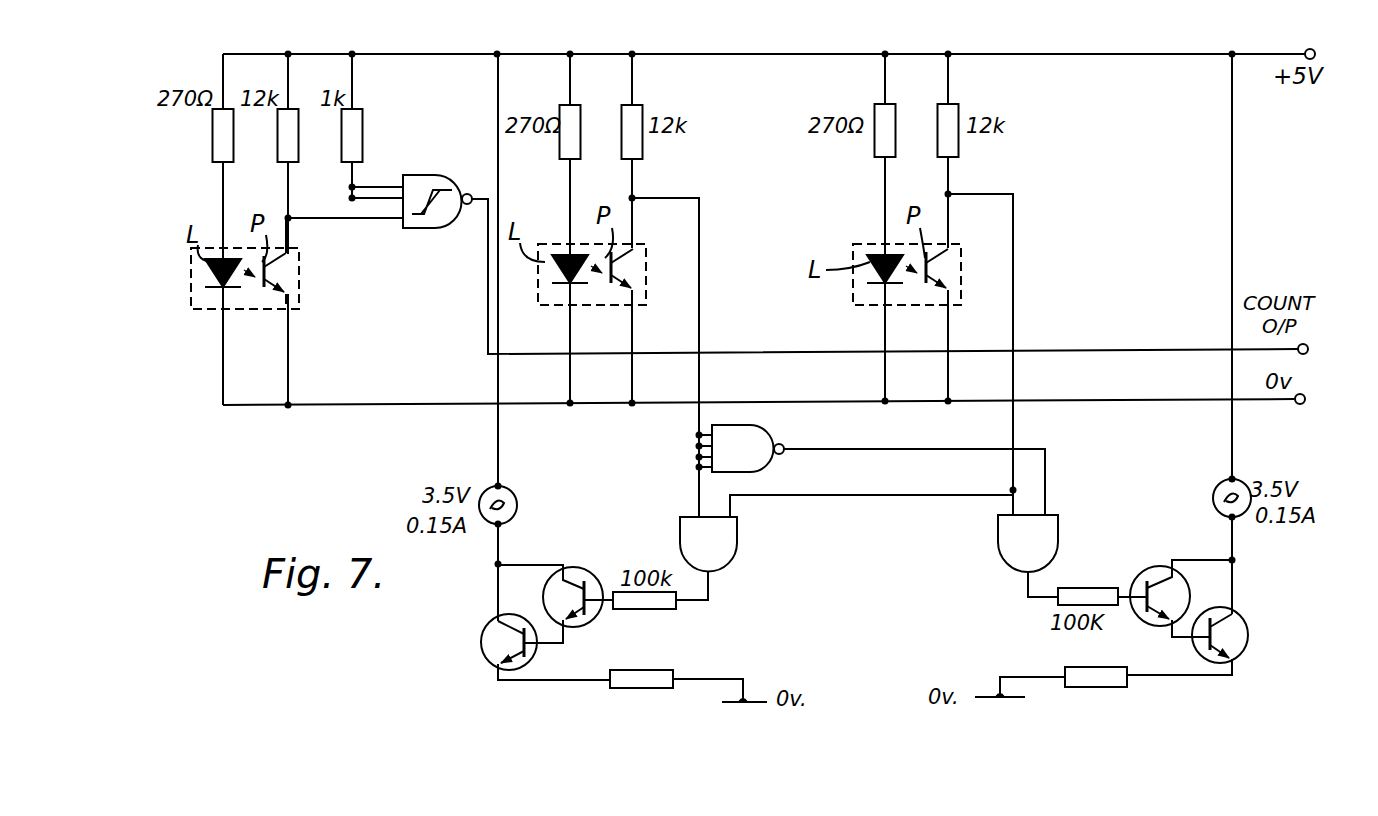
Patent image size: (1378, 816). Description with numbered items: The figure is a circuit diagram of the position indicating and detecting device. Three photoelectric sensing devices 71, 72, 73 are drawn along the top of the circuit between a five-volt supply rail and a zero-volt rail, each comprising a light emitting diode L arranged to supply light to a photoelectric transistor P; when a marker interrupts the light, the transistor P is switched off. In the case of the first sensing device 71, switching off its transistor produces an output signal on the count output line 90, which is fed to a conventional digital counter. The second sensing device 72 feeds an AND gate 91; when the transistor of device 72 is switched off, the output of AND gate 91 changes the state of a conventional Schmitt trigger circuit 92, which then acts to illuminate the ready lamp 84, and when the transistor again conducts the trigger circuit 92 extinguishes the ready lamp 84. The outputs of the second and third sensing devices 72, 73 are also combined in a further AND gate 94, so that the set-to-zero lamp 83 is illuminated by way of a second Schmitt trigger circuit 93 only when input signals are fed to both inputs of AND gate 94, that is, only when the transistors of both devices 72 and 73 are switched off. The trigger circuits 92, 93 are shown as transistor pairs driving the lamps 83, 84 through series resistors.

The photoelectric sensing device 71 is at (312, 270).
The photoelectric sensing device 72 is at (970, 257).
The photoelectric sensing device 73 is at (658, 264).
The lamp 83 is at (519, 501).
The ready lamp 84 is at (1212, 497).
The output line 90 is at (488, 323).
The AND gate 91 is at (1003, 557).
The Schmitt trigger circuit 92 is at (1210, 589).
The Schmitt trigger circuit 93 is at (530, 603).
The AND gate 94 is at (733, 560).